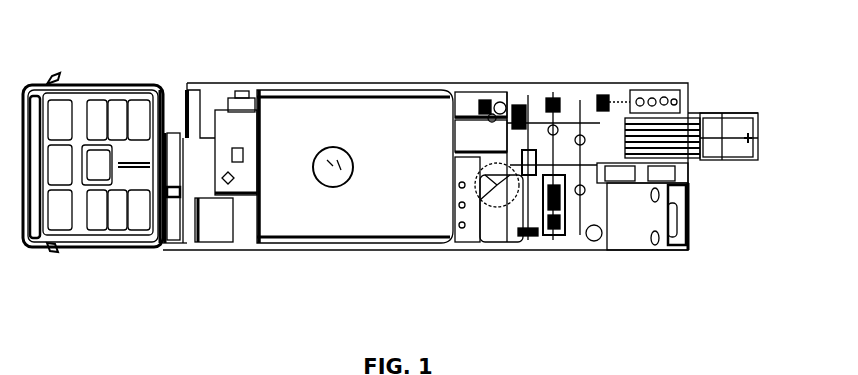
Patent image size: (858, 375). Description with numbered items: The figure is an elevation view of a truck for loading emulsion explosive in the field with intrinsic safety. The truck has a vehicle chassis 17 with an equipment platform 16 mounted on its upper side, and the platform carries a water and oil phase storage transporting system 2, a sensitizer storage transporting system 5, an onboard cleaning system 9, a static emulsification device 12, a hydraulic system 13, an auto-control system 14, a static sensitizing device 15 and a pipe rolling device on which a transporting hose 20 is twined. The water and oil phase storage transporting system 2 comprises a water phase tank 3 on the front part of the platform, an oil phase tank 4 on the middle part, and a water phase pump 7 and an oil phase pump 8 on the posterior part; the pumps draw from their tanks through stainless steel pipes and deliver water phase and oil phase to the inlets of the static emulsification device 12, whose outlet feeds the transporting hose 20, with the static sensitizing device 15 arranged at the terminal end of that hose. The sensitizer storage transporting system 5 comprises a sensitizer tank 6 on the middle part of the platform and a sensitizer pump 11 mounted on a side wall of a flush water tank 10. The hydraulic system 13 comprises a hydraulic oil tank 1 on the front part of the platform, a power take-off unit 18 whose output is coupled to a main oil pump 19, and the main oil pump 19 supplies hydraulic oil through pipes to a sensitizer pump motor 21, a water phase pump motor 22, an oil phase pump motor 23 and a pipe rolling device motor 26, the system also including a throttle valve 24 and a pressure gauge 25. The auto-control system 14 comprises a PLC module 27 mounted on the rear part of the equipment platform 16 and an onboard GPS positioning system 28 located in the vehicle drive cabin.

The hydraulic oil tank 1 is at (235, 125).
The water and oil phase storage transporting system 2 is at (285, 125).
The water phase tank 3 is at (320, 135).
The oil phase tank 4 is at (455, 145).
The sensitizer storage transporting system 5 is at (470, 112).
The sensitizer tank 6 is at (485, 107).
The water phase pump 7 is at (518, 105).
The oil phase pump 8 is at (553, 104).
The onboard cleaning system 9 is at (458, 212).
The flush water tank 10 is at (496, 205).
The sensitizer pump 11 is at (507, 238).
The static emulsification device 12 is at (592, 104).
The hydraulic system 13 is at (617, 160).
The auto-control system 14 is at (688, 113).
The static sensitizing device 15 is at (761, 140).
The equipment platform 16 is at (187, 238).
The vehicle chassis 17 is at (133, 246).
The power take-off unit 18 is at (167, 155).
The main oil pump 19 is at (188, 207).
The transporting hose 20 is at (718, 147).
The sensitizer pump motor 21 is at (525, 230).
The water phase pump motor 22 is at (553, 185).
The oil phase pump motor 23 is at (595, 240).
The throttle valve 24 is at (606, 184).
The pressure gauge 25 is at (637, 180).
The pipe rolling device motor 26 is at (677, 190).
The PLC module 27 is at (690, 200).
The onboard GPS positioning system 28 is at (52, 246).